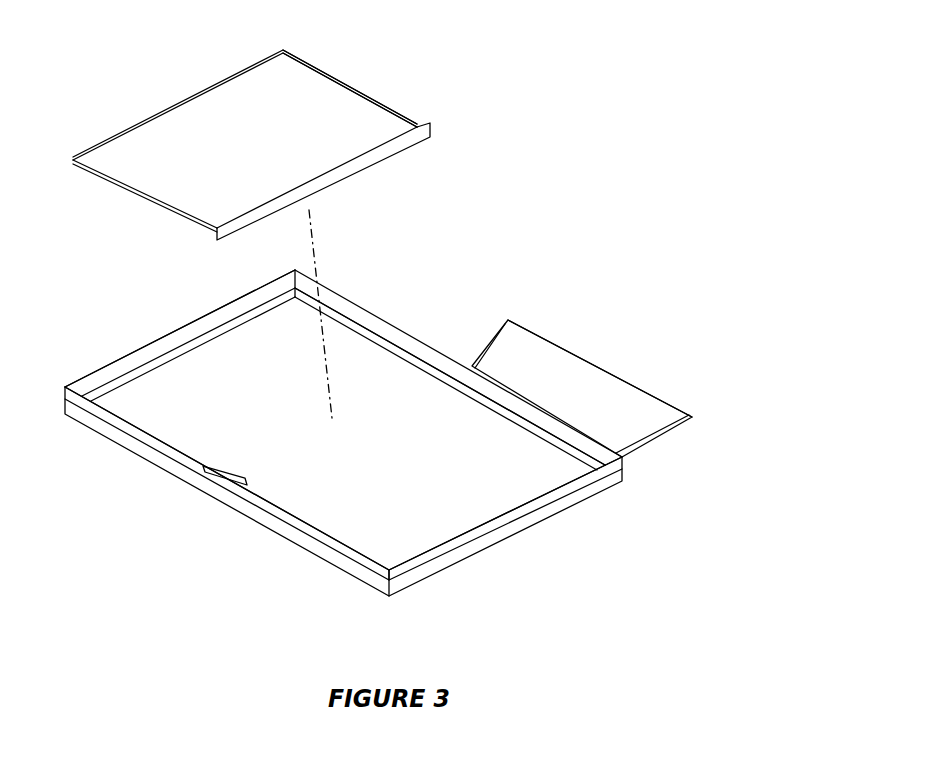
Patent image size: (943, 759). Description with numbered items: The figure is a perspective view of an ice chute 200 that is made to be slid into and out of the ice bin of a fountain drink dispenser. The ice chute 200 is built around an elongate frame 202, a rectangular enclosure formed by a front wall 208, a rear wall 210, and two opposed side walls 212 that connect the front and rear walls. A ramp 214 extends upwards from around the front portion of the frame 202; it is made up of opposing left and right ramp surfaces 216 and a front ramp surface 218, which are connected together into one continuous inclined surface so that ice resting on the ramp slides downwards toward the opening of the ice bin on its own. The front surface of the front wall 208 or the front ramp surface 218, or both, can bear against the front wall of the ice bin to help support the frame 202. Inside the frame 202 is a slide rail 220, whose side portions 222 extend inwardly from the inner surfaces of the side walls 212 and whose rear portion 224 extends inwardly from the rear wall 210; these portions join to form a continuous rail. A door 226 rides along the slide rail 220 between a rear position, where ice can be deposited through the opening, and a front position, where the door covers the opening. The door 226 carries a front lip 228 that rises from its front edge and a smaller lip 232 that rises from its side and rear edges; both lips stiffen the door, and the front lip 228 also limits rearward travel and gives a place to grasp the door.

The ice chute 200 is at (524, 110).
The elongate frame 202 is at (379, 297).
The front wall 208 is at (520, 527).
The rear wall 210 is at (161, 342).
The side walls 212 is at (172, 447).
The ramp 214 is at (565, 340).
The left and right ramp surfaces 216 is at (621, 381).
The front ramp surface 218 is at (546, 491).
The slide rail 220 is at (224, 340).
The side portions 222 is at (424, 363).
The rear portion 224 is at (147, 369).
The door 226 is at (301, 36).
The front lip 228 is at (410, 142).
The smaller lip 232 is at (357, 91).